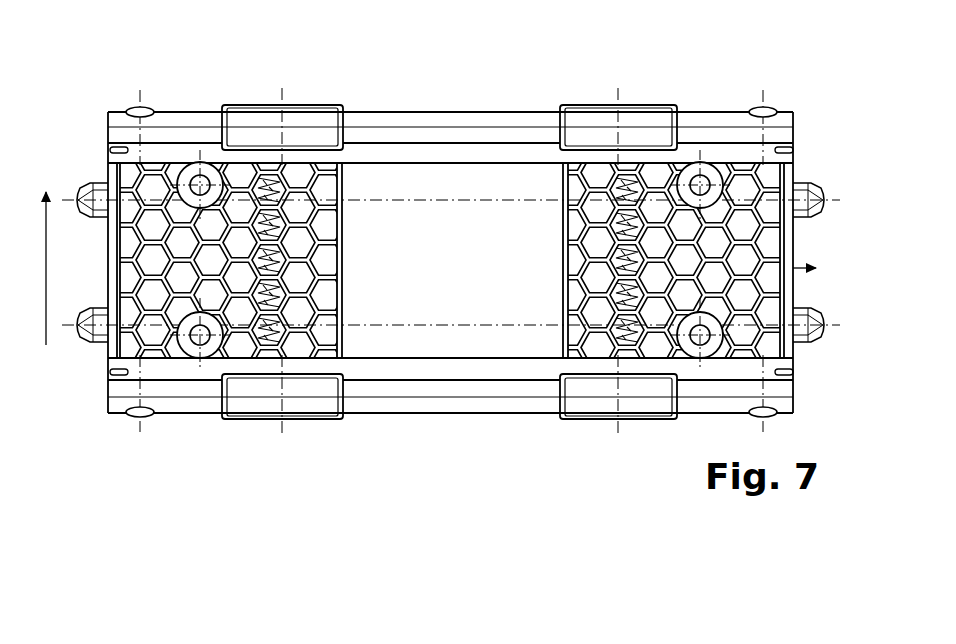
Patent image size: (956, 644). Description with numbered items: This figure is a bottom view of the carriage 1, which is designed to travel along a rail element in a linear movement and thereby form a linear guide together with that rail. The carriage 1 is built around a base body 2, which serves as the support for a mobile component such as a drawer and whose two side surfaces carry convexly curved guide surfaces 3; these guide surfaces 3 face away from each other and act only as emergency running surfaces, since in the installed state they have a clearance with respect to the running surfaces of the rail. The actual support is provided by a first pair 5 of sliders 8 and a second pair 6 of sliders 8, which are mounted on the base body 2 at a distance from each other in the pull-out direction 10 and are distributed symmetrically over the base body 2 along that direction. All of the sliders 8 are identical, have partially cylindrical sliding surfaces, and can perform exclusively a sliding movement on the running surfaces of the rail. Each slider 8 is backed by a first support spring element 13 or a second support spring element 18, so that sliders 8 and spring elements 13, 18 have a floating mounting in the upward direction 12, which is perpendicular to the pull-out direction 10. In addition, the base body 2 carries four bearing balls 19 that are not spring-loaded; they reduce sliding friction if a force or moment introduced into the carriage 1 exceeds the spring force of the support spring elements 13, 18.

The carriage 1 is at (545, 94).
The base body 2 is at (442, 135).
The guide surface 3 is at (413, 414).
The first pair of support elements 5 is at (272, 78).
The second pair of support elements 6 is at (580, 436).
The slider 8 is at (305, 108).
The pull-out direction 10 is at (810, 265).
The upward direction 12 is at (46, 275).
The first support spring element 13 is at (247, 245).
The second support spring element 18 is at (673, 167).
The bearing ball 19 is at (135, 107).